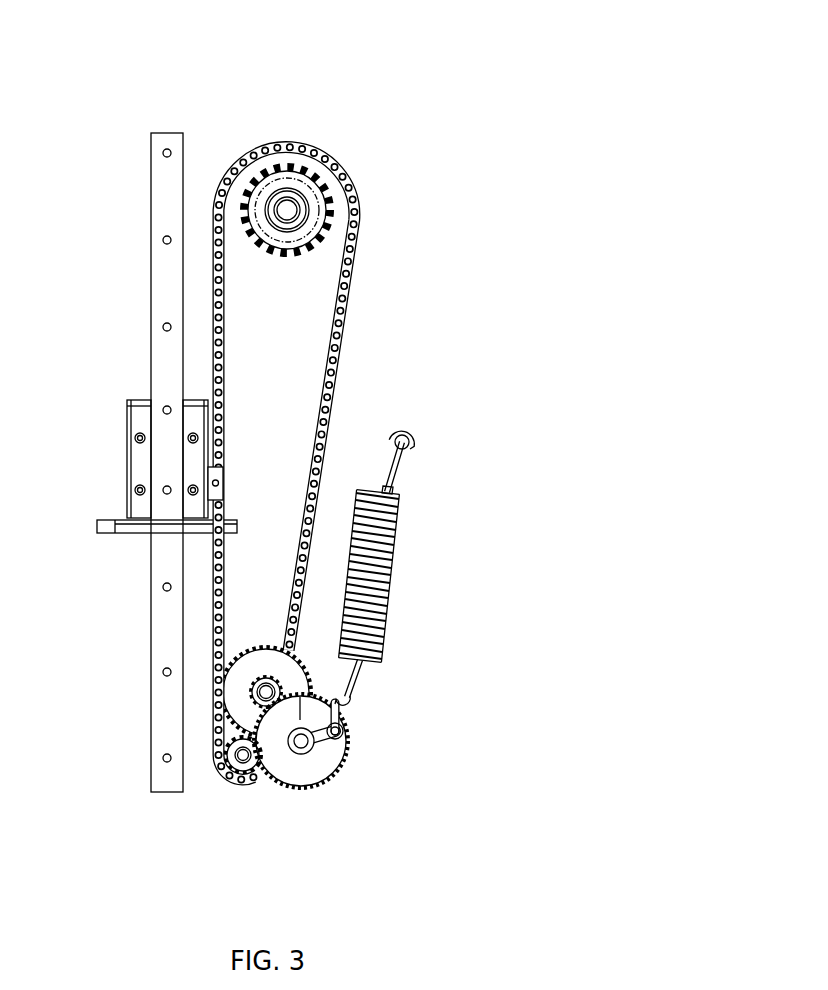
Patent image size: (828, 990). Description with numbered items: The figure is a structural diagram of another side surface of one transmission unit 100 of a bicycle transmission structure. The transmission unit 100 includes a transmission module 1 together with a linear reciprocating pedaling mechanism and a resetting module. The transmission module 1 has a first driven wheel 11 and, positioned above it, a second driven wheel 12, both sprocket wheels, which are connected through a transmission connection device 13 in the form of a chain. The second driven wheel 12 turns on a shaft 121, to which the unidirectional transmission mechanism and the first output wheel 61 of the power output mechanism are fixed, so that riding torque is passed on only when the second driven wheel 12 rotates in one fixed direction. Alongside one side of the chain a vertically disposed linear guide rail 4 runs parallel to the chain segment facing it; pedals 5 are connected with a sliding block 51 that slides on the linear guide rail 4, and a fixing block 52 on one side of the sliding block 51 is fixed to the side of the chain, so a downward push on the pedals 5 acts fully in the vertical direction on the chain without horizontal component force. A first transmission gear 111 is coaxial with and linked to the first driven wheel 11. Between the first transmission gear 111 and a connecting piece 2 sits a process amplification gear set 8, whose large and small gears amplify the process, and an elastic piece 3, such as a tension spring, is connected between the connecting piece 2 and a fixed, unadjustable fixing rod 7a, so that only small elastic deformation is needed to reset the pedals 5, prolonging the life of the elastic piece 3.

The transmission unit 100 is at (490, 63).
The transmission module 1 is at (290, 430).
The second driven wheel 12 is at (332, 176).
The shaft 121 is at (277, 213).
The first output wheel 61 is at (265, 172).
The transmission connection device 13 is at (371, 266).
The linear guide rail 4 is at (163, 298).
The sliding block 51 is at (143, 455).
The pedal 5 is at (127, 533).
The fixing block 52 is at (223, 468).
The first driven wheel 11 is at (237, 730).
The first transmission gear 111 is at (237, 787).
The process amplification gear set 8 is at (356, 771).
The connecting piece 2 is at (306, 772).
The elastic piece 3 is at (413, 567).
The fixing rod 7a is at (417, 442).